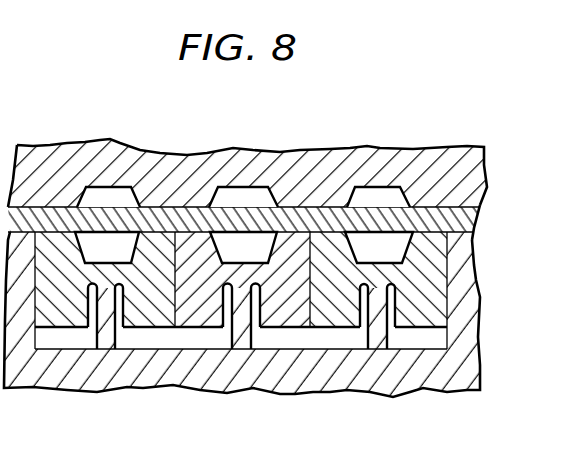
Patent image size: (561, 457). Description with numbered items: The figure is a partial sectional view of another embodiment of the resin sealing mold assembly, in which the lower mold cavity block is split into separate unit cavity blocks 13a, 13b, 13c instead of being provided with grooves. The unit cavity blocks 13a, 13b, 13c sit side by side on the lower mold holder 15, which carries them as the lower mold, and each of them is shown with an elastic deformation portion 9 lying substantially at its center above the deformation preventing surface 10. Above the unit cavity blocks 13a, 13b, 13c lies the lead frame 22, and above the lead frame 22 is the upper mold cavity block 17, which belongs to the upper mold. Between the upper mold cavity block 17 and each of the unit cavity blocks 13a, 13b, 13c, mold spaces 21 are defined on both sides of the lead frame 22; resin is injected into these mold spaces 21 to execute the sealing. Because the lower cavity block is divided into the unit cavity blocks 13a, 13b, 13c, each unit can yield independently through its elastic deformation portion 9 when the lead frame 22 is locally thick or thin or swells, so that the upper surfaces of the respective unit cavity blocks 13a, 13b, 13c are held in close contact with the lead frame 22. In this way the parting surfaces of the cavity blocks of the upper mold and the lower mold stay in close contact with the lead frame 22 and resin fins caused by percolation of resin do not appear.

The upper mold cavity block 17 is at (467, 185).
The lead frame 22 is at (460, 220).
The mold spaces (cavities) 21 is at (381, 202).
The lower mold holder 15 is at (468, 370).
The unit cavity block 13a is at (62, 313).
The unit cavity block 13b is at (198, 313).
The unit cavity block 13c is at (418, 317).
The elastic deformation portion 9 is at (245, 337).
The deformation preventing surface 10 is at (335, 327).